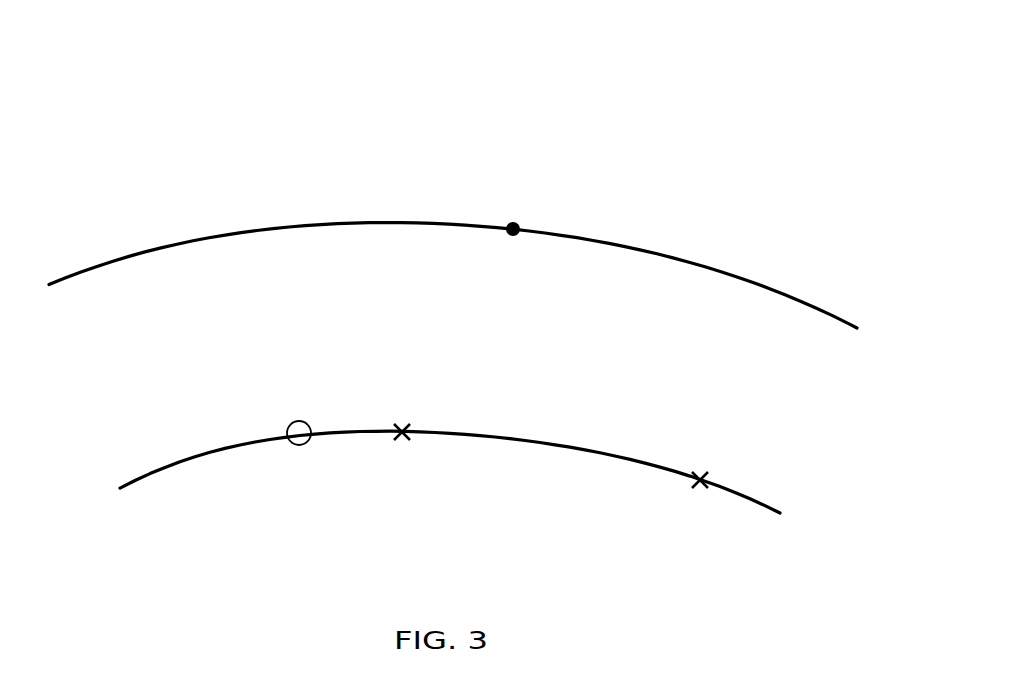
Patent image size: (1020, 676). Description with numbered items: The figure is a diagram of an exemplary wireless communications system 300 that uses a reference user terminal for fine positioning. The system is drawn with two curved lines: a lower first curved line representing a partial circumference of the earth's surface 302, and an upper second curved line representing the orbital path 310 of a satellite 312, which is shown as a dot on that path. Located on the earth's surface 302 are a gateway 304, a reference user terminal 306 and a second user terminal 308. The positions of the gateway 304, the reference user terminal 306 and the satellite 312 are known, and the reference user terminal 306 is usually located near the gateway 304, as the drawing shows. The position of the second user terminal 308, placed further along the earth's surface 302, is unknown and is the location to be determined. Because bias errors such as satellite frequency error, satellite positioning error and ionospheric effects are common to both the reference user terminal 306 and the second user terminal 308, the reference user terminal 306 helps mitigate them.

The communications system 300 is at (694, 66).
The earth's surface 302 is at (767, 508).
The gateway 304 is at (296, 447).
The reference user terminal 306 is at (395, 443).
The second user terminal 308 is at (697, 490).
The orbital path 310 is at (750, 282).
The satellite 312 is at (510, 238).